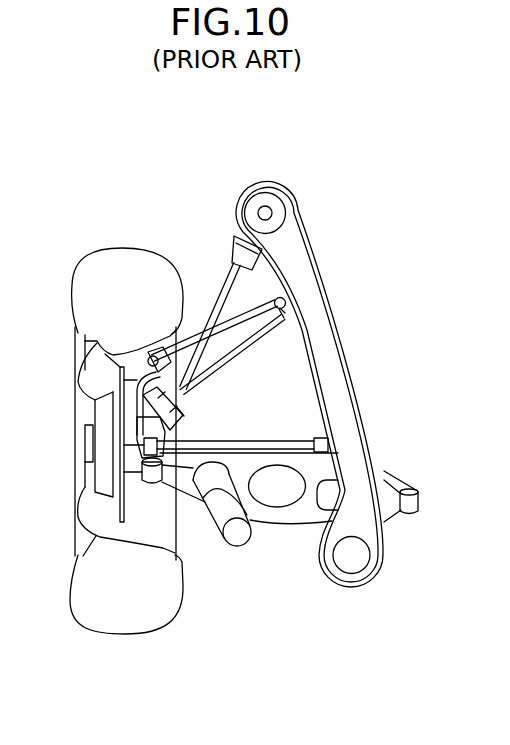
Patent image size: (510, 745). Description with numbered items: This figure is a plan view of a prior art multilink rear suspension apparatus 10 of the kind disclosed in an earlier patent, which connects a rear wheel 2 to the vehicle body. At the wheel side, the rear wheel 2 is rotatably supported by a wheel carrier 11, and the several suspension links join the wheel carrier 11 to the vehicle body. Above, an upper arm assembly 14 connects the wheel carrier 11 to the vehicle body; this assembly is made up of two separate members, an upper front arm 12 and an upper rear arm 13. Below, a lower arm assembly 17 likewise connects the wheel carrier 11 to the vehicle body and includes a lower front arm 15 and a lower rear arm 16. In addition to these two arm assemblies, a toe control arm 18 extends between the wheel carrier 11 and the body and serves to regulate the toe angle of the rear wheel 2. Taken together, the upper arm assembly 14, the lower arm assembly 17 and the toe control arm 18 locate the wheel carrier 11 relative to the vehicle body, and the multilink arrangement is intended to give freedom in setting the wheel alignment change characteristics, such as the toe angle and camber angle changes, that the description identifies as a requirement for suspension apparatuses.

The rear wheel 2 is at (94, 259).
The rear suspension apparatus 10 is at (255, 552).
The wheel carrier 11 is at (127, 449).
The upper front arm 12 is at (200, 370).
The upper rear arm 13 is at (200, 438).
The upper arm assembly 14 is at (266, 371).
The lower front arm 15 is at (232, 284).
The lower rear arm 16 is at (320, 464).
The lower arm assembly 17 is at (435, 298).
The toe control arm 18 is at (193, 343).